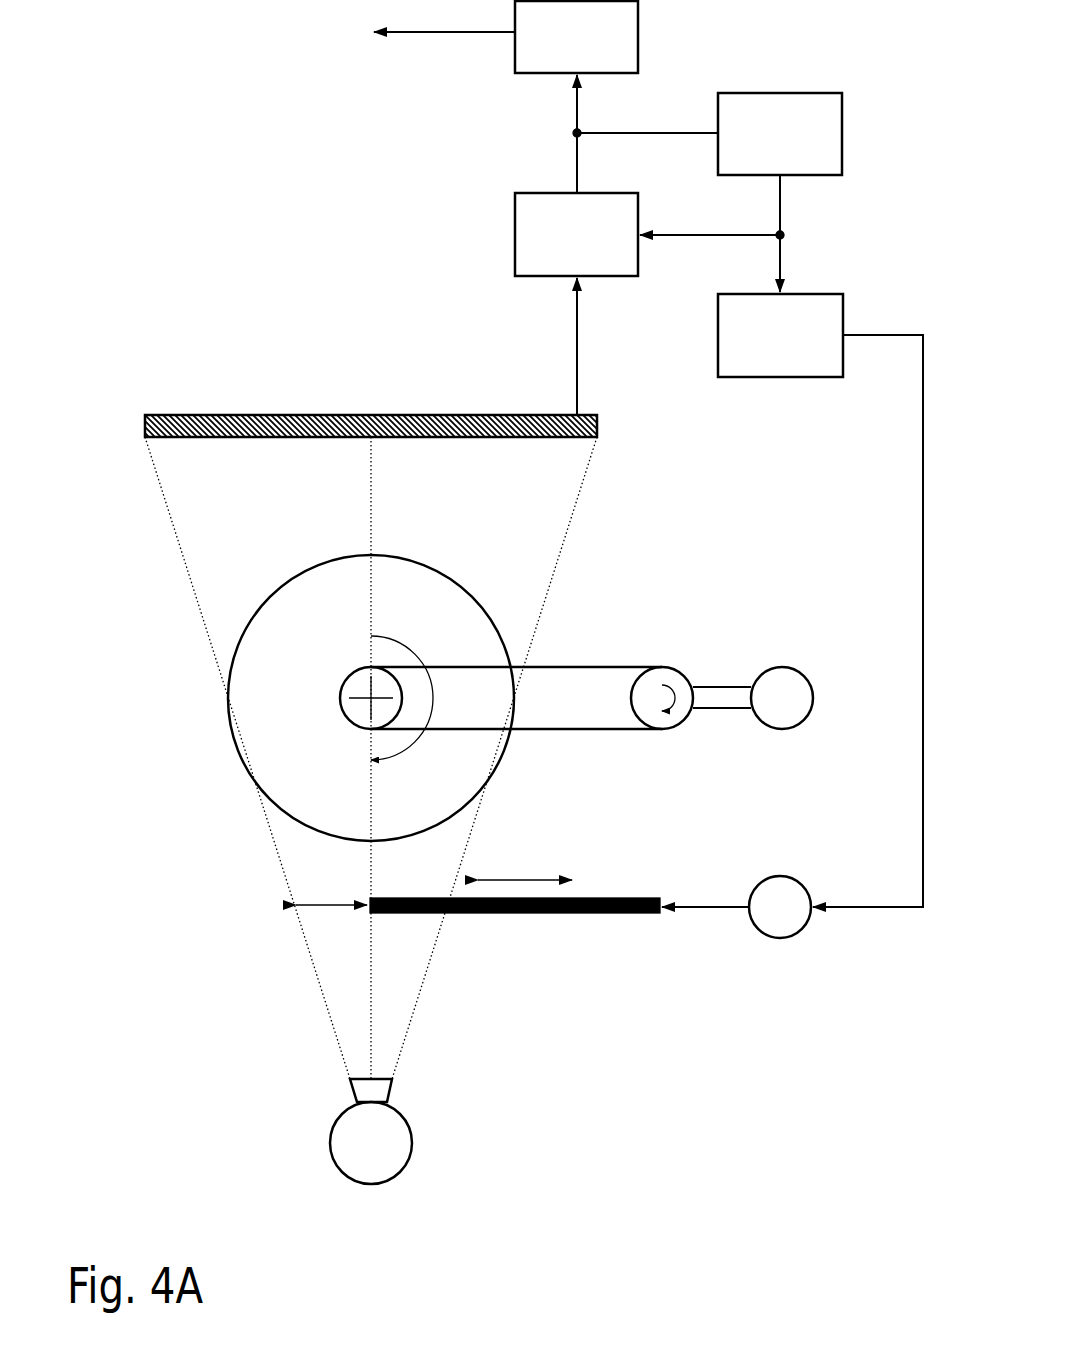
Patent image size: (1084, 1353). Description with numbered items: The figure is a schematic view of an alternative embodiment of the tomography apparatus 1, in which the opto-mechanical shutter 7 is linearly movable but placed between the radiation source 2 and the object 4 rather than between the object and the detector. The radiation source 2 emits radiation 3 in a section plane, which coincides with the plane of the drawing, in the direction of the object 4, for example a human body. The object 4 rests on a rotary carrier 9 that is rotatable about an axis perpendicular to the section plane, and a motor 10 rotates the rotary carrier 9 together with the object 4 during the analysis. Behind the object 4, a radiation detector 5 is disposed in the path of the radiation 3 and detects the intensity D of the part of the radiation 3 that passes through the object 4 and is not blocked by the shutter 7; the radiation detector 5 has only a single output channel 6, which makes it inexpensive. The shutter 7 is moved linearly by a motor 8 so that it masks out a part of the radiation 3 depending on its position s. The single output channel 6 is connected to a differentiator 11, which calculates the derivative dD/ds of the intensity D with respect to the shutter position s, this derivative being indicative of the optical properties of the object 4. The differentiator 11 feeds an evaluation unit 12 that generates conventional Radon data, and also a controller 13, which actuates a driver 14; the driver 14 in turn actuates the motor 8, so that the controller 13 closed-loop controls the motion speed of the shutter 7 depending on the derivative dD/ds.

The tomography apparatus 1 is at (700, 1058).
The radiation source 2 is at (412, 1143).
The radiation 3 is at (410, 1020).
The object 4 is at (266, 721).
The radiation detector 5 is at (177, 415).
The single output channel 6 is at (577, 376).
The opto-mechanical shutter 7 is at (608, 913).
The motor 8 is at (805, 927).
The rotary carrier 9 is at (305, 568).
The motor 10 is at (812, 699).
The differentiator 11 is at (515, 237).
The evaluation unit 12 is at (638, 12).
The controller 13 is at (718, 153).
The driver 14 is at (718, 317).